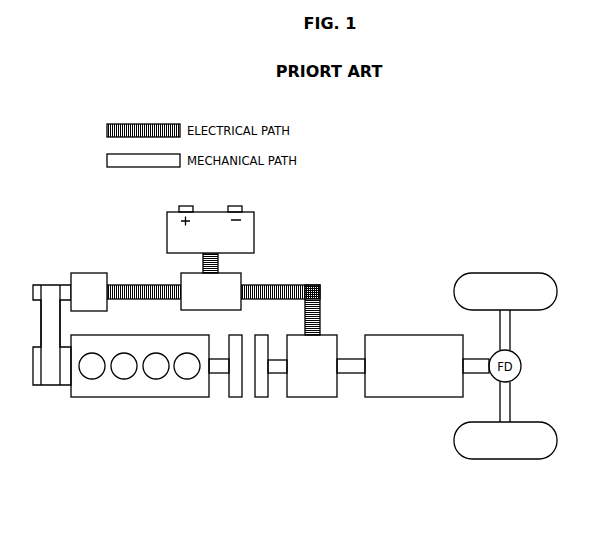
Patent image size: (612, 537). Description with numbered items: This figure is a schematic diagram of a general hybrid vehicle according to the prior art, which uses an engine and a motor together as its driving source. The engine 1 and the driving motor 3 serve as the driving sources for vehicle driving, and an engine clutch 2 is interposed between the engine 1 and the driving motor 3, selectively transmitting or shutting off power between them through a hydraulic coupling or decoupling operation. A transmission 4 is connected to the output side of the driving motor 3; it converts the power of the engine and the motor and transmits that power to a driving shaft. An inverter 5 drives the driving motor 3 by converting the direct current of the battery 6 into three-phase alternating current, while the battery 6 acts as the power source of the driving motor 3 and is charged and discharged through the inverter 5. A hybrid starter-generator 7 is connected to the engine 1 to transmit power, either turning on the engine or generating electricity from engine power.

The engine 1 is at (138, 397).
The engine clutch 2 is at (258, 397).
The driving motor 3 is at (311, 397).
The transmission 4 is at (412, 397).
The inverter 5 is at (242, 273).
The battery 6 is at (254, 230).
The hybrid starter-generator (HSG) 7 is at (86, 273).